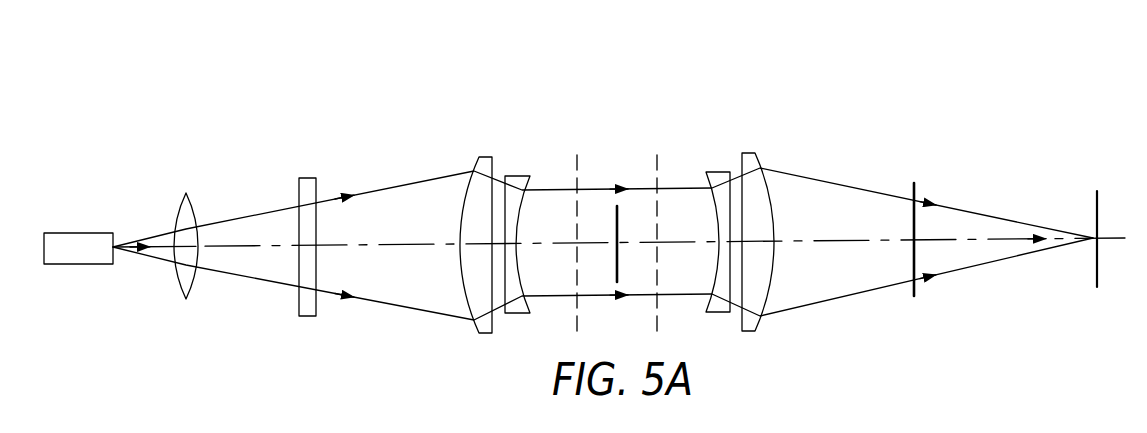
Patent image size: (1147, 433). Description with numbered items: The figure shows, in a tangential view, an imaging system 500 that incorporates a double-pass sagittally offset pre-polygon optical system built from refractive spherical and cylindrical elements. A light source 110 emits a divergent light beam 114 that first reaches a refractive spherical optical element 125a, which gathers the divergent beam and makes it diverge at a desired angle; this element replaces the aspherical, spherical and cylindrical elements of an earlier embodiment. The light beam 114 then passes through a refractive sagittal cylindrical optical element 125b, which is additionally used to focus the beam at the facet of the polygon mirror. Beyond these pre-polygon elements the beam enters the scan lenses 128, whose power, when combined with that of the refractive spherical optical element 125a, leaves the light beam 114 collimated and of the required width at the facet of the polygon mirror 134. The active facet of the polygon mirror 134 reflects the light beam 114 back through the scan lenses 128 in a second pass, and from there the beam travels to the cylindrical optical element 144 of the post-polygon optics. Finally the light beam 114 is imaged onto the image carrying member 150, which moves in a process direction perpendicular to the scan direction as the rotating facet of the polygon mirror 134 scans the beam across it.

The imaging system 500 is at (972, 46).
The light source 110 is at (57, 233).
The light beam 114 is at (151, 257).
The refractive spherical optical element 125a is at (185, 193).
The refractive sagittal cylindrical optical element 125b is at (308, 177).
The scan lenses 128 is at (532, 146).
The polygon mirror 134 is at (615, 206).
The cylindrical optical element 144 is at (915, 192).
The image carrying member 150 is at (1096, 273).